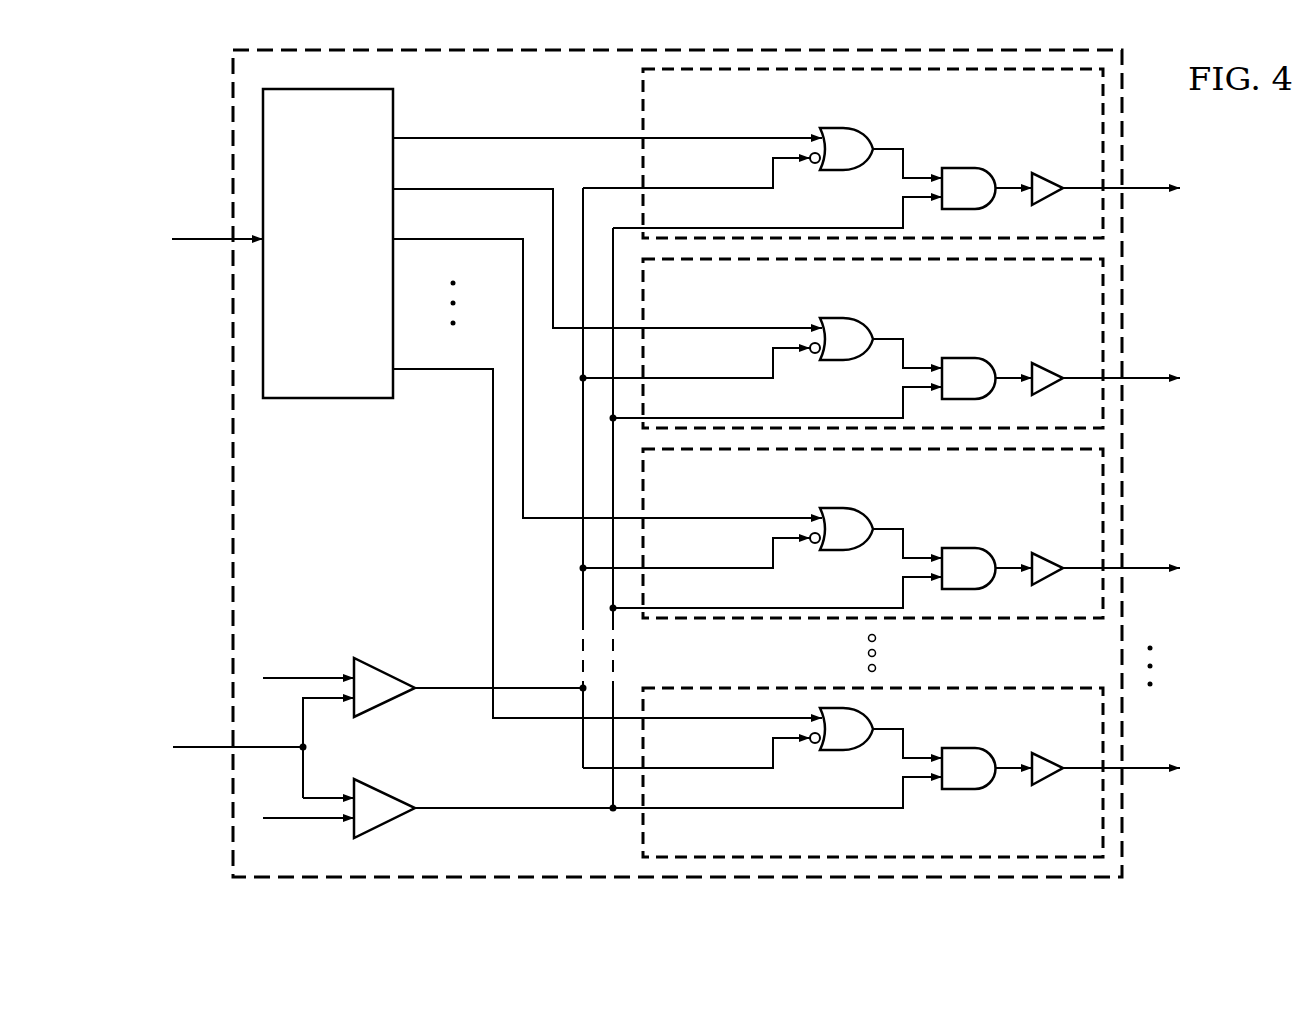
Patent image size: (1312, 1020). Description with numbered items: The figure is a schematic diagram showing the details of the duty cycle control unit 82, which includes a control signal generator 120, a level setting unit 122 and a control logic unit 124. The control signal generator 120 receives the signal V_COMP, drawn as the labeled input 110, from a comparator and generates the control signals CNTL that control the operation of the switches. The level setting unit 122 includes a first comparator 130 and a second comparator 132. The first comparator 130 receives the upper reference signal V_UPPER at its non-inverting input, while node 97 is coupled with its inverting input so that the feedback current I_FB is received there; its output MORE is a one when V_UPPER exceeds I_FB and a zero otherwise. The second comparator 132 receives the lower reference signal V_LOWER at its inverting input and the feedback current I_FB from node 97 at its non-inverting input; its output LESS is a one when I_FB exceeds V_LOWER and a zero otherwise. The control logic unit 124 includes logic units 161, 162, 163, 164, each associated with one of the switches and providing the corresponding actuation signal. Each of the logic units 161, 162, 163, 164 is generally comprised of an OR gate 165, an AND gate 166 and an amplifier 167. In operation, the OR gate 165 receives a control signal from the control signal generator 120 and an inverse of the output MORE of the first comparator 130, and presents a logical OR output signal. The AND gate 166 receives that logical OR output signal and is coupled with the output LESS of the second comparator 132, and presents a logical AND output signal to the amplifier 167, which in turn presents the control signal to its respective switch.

The duty cycle control unit 82 is at (233, 632).
The node 97 is at (203, 752).
The compensation signal input 110 is at (206, 238).
The control signal generator 120 is at (348, 293).
The level setting unit 122 is at (432, 607).
The control logic unit 124 is at (472, 477).
The first comparator 130 is at (389, 669).
The second comparator 132 is at (389, 789).
The logic unit 161 is at (1043, 110).
The logic unit 162 is at (1043, 301).
The logic unit 163 is at (1043, 491).
The logic unit 164 is at (1023, 732).
The OR gate 165 is at (842, 438).
The AND gate 166 is at (969, 478).
The amplifier 167 is at (1061, 478).